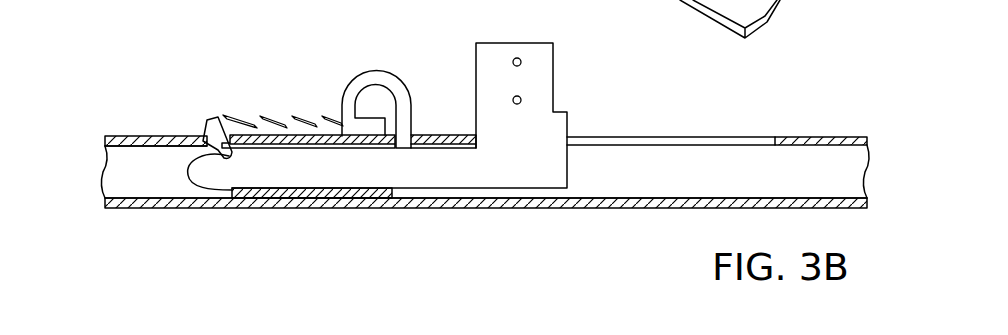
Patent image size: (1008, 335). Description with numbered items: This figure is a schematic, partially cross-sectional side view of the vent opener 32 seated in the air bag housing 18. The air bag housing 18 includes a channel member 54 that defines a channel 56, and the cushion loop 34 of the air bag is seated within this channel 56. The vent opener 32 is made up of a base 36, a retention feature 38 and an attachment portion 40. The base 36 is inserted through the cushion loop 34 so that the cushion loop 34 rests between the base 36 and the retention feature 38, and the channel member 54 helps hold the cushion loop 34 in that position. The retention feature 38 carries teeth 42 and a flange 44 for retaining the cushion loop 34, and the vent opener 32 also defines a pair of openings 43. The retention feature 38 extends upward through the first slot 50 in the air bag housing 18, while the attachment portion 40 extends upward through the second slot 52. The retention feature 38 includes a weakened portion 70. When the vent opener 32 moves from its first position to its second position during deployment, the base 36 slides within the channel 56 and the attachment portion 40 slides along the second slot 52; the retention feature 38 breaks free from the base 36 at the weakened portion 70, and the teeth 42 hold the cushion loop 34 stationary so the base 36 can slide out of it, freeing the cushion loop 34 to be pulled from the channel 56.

The air bag housing 18 is at (148, 140).
The vent opener 32 is at (568, 125).
The cushion loop 34 is at (205, 155).
The base 36 is at (428, 190).
The retention feature 38 is at (300, 114).
The attachment portion 40 is at (517, 43).
The teeth 42 is at (258, 148).
The openings 43 is at (521, 98).
The flange 44 is at (238, 150).
The first slot 50 is at (208, 138).
The second slot 52 is at (772, 137).
The channel member 54 is at (153, 208).
The channel 56 is at (128, 194).
The weakened portion 70 is at (413, 138).